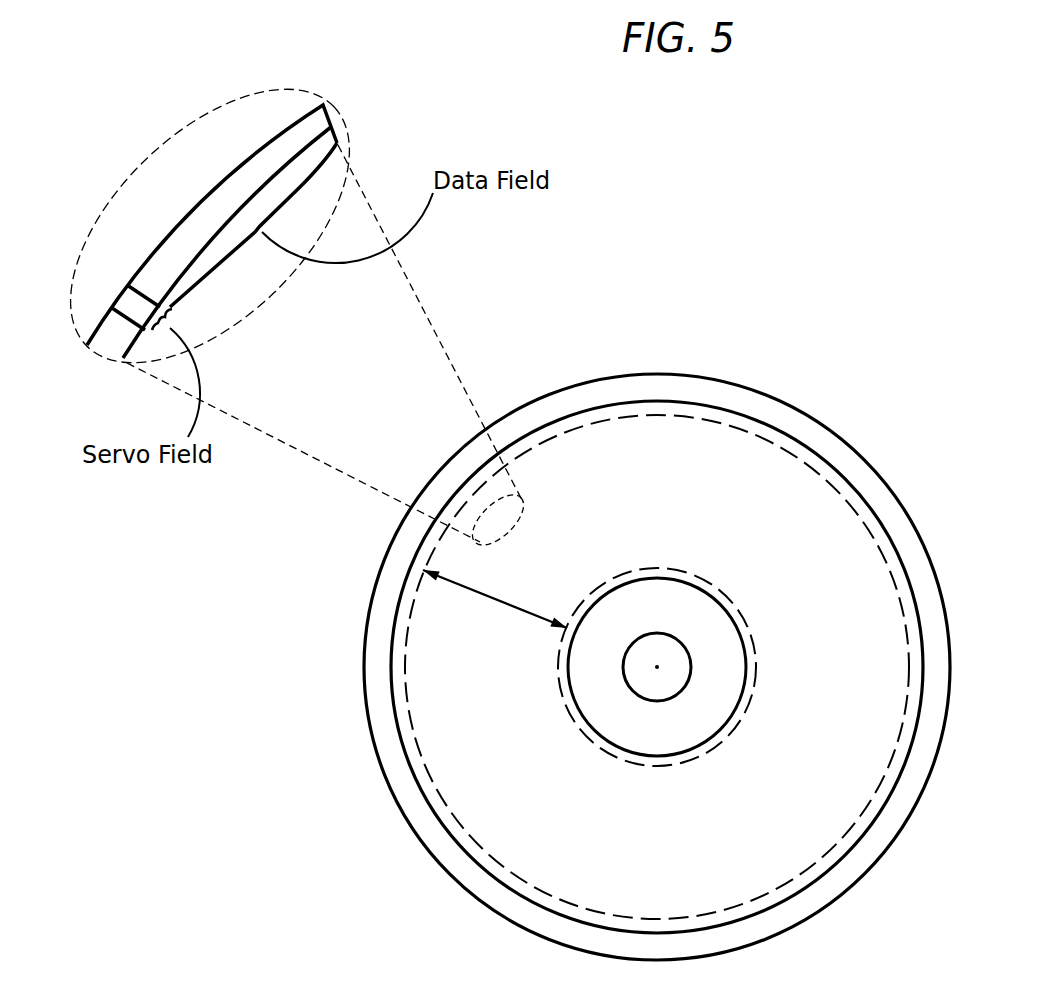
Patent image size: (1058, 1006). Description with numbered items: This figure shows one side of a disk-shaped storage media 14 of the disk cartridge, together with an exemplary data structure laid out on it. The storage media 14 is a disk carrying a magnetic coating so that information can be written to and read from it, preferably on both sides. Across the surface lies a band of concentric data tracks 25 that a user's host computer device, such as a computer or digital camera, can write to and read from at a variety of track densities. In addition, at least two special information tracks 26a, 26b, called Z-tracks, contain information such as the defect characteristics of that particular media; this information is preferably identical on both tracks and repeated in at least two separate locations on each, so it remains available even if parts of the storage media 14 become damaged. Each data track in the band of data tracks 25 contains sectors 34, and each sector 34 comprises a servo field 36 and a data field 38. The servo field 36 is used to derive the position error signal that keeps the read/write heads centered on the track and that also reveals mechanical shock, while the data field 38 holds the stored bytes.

The disk-shaped storage media 14 is at (840, 945).
The band of concentric data tracks 25 is at (490, 590).
The special information track 26a is at (395, 720).
The special information track 26b is at (620, 758).
The sector 34 is at (228, 176).
The servo field 36 is at (132, 300).
The data field 38 is at (310, 143).